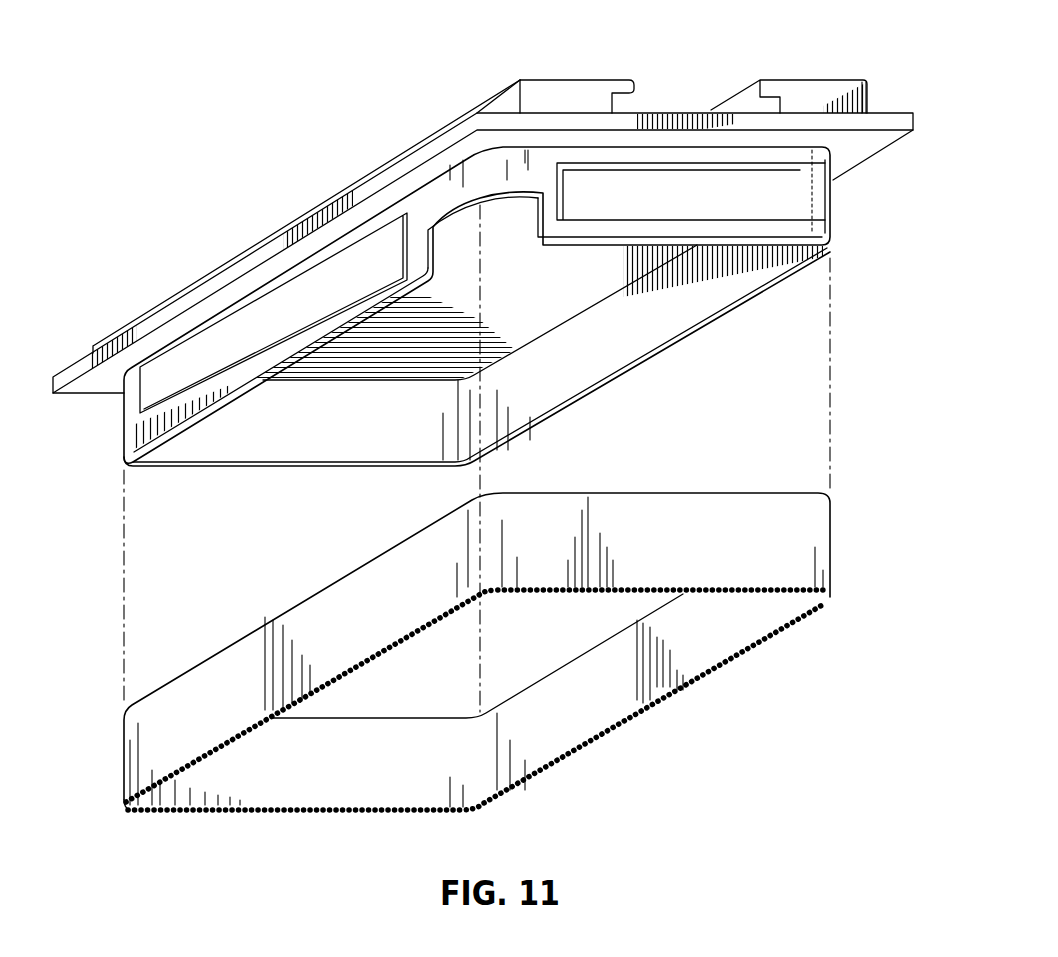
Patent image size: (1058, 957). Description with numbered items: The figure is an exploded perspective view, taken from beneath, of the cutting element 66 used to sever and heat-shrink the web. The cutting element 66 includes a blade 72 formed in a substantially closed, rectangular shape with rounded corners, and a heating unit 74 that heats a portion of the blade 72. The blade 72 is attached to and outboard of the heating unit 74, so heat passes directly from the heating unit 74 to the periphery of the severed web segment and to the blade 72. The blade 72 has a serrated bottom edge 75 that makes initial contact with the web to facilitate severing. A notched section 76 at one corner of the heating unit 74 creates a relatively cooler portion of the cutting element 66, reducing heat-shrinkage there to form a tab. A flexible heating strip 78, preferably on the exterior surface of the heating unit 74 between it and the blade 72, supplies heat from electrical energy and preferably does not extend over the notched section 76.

The cutting element 66 is at (860, 54).
The blade 72 is at (122, 770).
The heating unit 74 is at (362, 432).
The serrated bottom edge 75 is at (243, 815).
The notched section 76 is at (470, 237).
The heating strip 78 is at (801, 201).